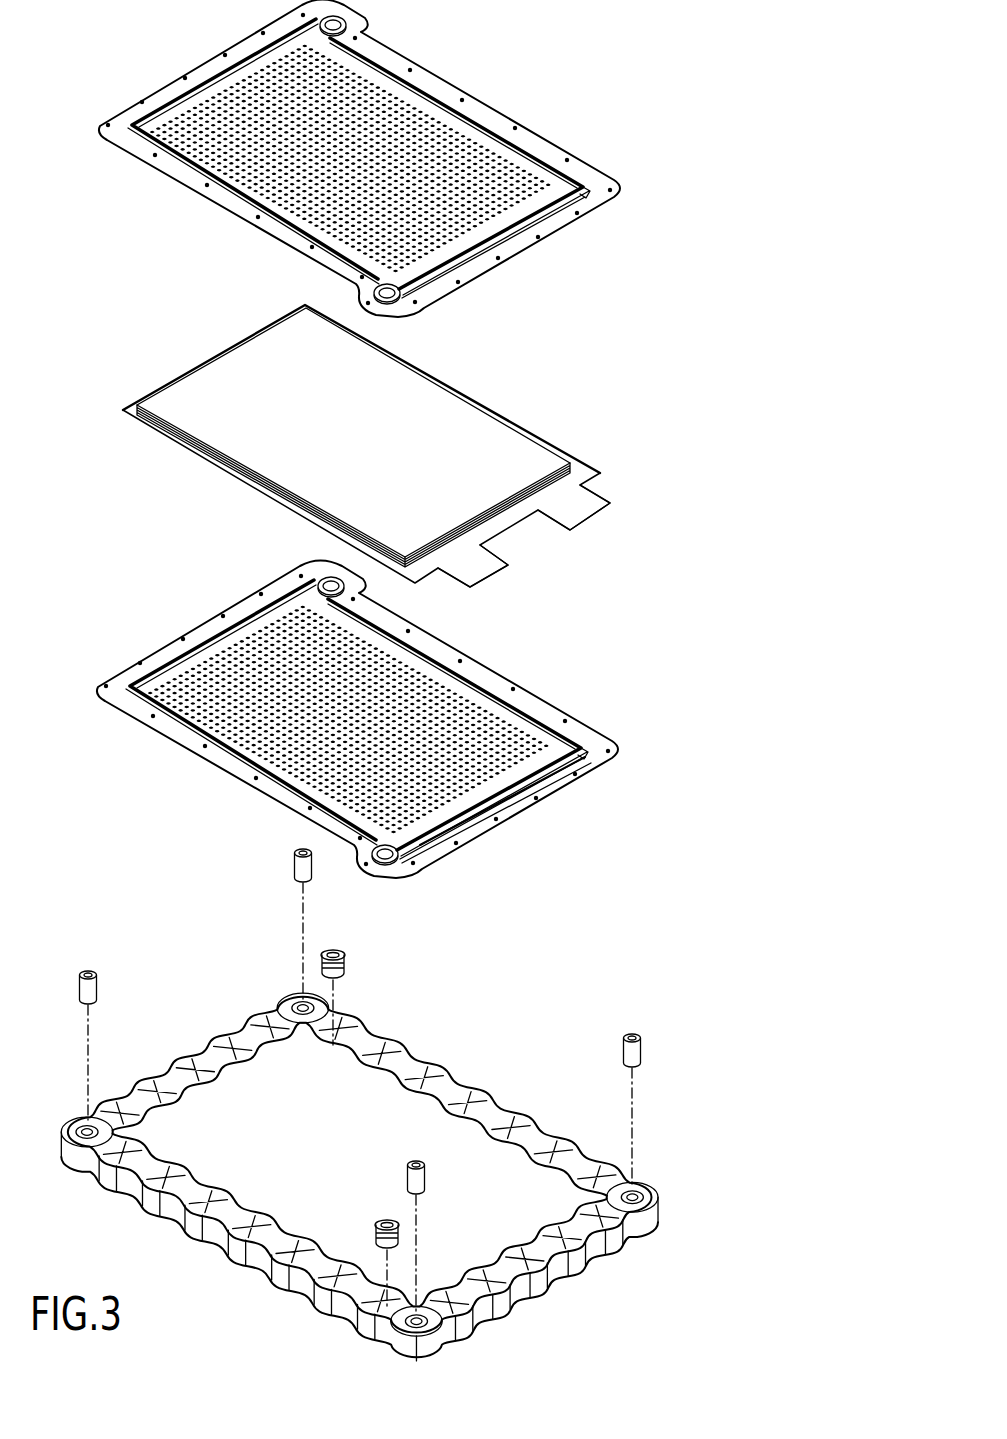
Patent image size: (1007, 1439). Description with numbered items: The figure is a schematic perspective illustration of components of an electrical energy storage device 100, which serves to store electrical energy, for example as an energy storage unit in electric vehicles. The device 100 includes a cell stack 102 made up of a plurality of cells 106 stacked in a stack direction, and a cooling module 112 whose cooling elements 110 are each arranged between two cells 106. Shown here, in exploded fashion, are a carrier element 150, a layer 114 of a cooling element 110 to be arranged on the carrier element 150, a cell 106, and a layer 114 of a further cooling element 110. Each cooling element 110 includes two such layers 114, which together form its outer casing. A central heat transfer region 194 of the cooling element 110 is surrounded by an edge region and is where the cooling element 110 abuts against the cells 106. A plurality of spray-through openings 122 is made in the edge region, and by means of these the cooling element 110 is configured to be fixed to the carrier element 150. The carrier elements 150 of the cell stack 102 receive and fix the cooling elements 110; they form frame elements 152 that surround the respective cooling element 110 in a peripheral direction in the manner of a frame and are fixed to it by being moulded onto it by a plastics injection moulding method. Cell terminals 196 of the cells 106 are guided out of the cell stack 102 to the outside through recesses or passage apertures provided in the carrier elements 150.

The electrical energy storage device 100 is at (615, 125).
The cell stack 102 is at (677, 162).
The cell 106 is at (371, 456).
The cooling element 110 is at (392, 452).
The cooling module 112 is at (687, 405).
The layer 114 is at (522, 200).
The spray-through opening 122 is at (540, 803).
The carrier element 150 is at (403, 1108).
The frame element 152 is at (650, 1217).
The central heat transfer region 194 is at (457, 150).
The cell terminal 196 is at (580, 517).